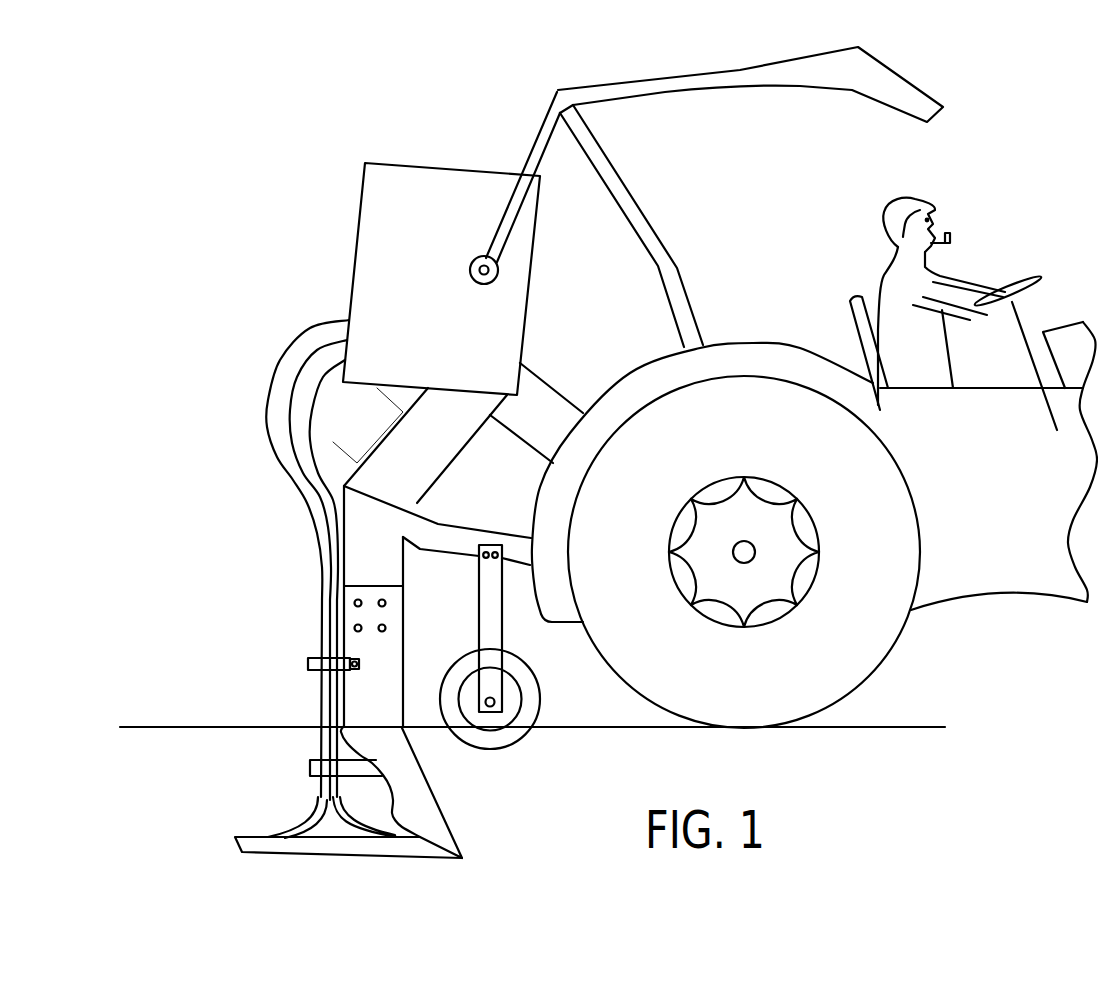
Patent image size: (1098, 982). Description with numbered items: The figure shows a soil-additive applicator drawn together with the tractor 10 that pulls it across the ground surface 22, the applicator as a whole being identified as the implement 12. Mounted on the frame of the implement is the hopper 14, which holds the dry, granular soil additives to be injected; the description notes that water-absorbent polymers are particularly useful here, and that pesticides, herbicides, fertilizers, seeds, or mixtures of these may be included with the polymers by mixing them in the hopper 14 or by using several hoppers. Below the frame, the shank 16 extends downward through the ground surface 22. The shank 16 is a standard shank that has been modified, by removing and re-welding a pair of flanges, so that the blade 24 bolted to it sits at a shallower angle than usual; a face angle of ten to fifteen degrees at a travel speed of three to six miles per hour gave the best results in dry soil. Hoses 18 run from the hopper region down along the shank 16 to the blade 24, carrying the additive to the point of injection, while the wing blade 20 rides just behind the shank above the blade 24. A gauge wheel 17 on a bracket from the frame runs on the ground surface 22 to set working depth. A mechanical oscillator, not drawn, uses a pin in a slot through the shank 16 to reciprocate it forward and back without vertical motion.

The tractor 10 is at (1018, 525).
The subsoiler implement 12 is at (438, 150).
The hopper 14 is at (415, 306).
The shank 16 is at (355, 567).
The gauge wheel 17 is at (540, 700).
The hoses 18 is at (300, 494).
The wing blade 20 is at (417, 793).
The ground surface 22 is at (157, 725).
The blade 24 is at (328, 843).